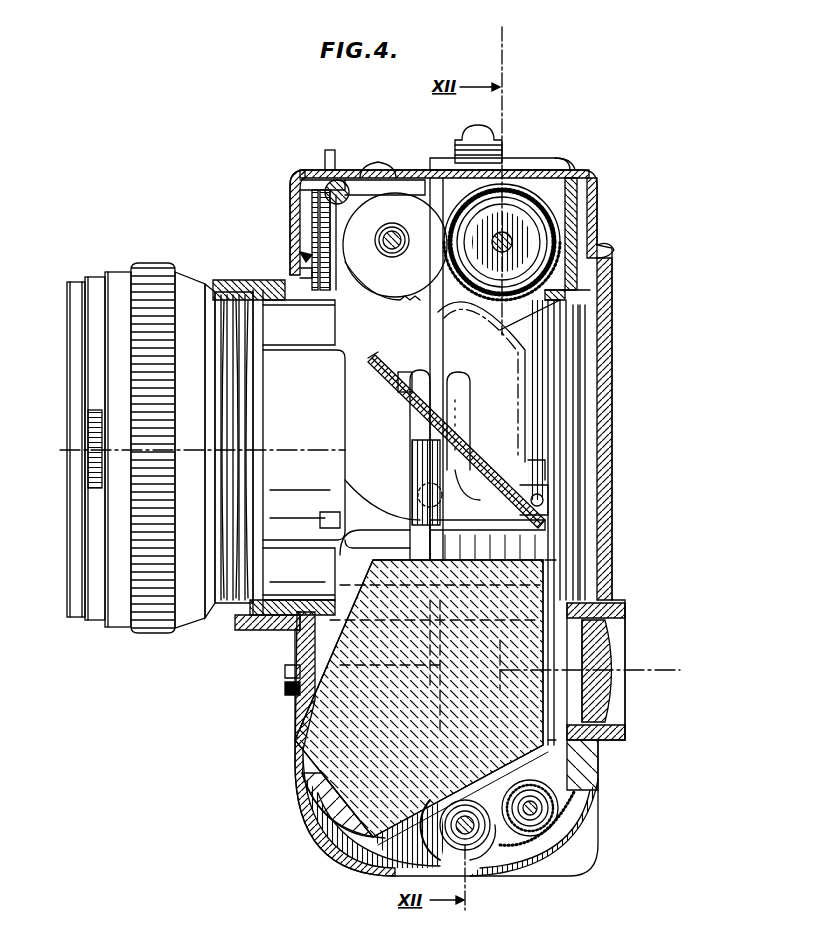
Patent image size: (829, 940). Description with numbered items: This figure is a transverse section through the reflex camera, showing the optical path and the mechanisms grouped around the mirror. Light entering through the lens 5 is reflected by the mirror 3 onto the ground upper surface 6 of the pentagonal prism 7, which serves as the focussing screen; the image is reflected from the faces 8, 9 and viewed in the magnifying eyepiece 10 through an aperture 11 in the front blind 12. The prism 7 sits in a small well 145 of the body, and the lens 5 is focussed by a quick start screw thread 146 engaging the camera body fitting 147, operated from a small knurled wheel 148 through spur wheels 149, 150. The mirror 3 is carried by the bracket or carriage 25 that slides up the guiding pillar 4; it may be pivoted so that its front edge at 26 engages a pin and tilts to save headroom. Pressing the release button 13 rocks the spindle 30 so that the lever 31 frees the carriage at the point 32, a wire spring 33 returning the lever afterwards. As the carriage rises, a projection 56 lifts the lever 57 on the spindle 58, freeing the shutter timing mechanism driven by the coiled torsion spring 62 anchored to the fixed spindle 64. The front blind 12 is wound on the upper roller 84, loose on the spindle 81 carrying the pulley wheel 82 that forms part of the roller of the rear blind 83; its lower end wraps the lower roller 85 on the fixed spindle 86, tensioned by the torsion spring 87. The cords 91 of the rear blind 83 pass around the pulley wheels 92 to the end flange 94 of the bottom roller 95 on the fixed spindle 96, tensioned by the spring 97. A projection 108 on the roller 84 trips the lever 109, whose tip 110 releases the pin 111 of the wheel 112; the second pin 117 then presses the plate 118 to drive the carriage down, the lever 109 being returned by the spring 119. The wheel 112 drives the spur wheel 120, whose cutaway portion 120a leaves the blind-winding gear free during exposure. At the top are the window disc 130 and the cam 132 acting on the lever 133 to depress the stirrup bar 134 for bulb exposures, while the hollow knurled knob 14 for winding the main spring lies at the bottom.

The mirror 3 is at (405, 398).
The guiding pillar 4 is at (445, 328).
The lens 5 is at (165, 628).
The upper surface of prism 6 is at (400, 572).
The pentagonal prism 7 is at (290, 688).
The prism face 8 is at (305, 798).
The prism face 9 is at (290, 670).
The magnifying eyepiece 10 is at (607, 660).
The aperture 11 is at (580, 645).
The inner or front blind 12 is at (556, 550).
The release button 13 is at (490, 132).
The hollow knurled knob 14 is at (585, 855).
The mirror carriage (bracket) 25 is at (440, 486).
The front edge of mirror 26 is at (380, 365).
The spindle 30 is at (487, 540).
The lever 31 is at (472, 410).
The catch (release point) 32 is at (450, 368).
The wire spring 33 is at (375, 598).
The projection 56 is at (408, 372).
The lever 57 is at (340, 184).
The spindle 58 is at (305, 184).
The coiled torsion spring 62 is at (375, 240).
The fixed spindle 64 is at (303, 256).
The spindle 81 is at (540, 215).
The pulley wheel 82 is at (560, 165).
The outer or rear blind 83 is at (565, 418).
The upper roller 84 is at (562, 195).
The lower roller 85 is at (575, 786).
The fixed spindle 86 is at (555, 818).
The torsion spring 87 is at (553, 812).
The cords 91 is at (525, 828).
The pulley wheels 92 is at (560, 805).
The end flange 94 is at (452, 842).
The bottom roller 95 is at (436, 838).
The fixed spindle 96 is at (465, 840).
The spring 97 is at (488, 845).
The projection 108 is at (560, 305).
The lever 109 is at (565, 330).
The tip of lever 110 is at (425, 470).
The pin 111 is at (420, 496).
The wheel 112 is at (613, 389).
The second pin 117 is at (440, 340).
The plate 118 is at (382, 493).
The spring 119 is at (528, 465).
The spur wheel 120 is at (333, 242).
The cutaway portion 120a is at (395, 246).
The transparent window disc 130 is at (522, 160).
The cam 132 is at (322, 222).
The lever 133 is at (415, 178).
The stirrup bar 134 is at (441, 176).
The well 145 is at (300, 765).
The quick start screw thread 146 is at (255, 625).
The camera body fitting 147 is at (270, 630).
The small knurled wheel 148 is at (325, 160).
The spur wheel 149 is at (315, 205).
The spur wheel 150 is at (312, 275).